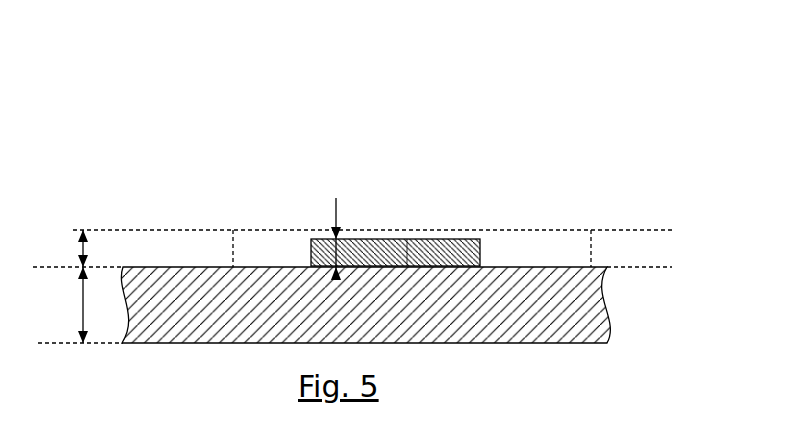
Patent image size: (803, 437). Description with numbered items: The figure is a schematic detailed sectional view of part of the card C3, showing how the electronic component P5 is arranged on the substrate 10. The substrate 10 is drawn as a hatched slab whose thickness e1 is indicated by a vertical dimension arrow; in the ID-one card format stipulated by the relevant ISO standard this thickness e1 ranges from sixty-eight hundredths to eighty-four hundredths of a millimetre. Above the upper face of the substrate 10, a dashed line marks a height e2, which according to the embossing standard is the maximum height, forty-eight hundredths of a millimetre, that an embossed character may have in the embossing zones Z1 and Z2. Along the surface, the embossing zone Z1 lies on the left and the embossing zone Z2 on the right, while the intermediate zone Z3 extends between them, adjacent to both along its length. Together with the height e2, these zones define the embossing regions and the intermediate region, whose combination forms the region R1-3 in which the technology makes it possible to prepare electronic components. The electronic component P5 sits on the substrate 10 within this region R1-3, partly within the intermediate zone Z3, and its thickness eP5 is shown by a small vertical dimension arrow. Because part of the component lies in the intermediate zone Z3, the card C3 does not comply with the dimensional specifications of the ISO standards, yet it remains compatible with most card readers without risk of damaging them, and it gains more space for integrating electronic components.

The substrate 10 is at (573, 328).
The electronic component P5 is at (463, 241).
The intermediate zone Z3 is at (406, 265).
The card C3 is at (598, 102).
The region R1-3 is at (264, 239).
The first embossing zone Z1 is at (255, 267).
The second embossing zone Z2 is at (537, 267).
The thickness of the electronic component eP5 is at (337, 198).
The height of the embossing regions e2 is at (63, 248).
The thickness of the substrate e1 is at (63, 305).